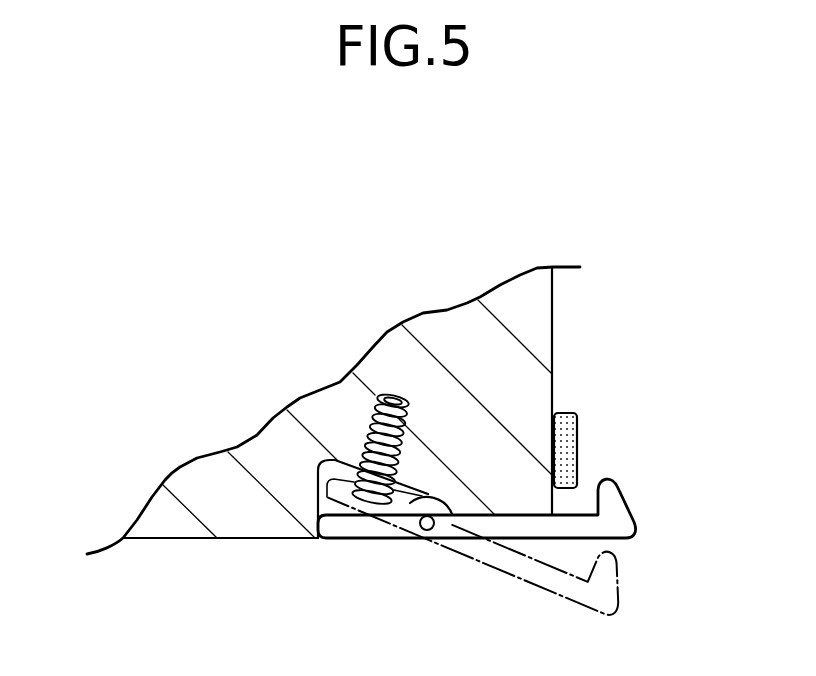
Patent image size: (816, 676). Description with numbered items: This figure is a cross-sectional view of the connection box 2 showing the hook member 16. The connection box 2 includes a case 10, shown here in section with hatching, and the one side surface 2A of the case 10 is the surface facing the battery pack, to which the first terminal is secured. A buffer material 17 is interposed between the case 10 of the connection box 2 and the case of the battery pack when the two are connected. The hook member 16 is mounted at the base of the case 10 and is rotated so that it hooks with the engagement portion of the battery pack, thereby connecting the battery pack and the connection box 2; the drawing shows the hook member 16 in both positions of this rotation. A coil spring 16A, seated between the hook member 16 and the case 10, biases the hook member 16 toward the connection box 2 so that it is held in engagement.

The connection box 2 is at (525, 207).
The one side surface 2A is at (553, 312).
The case 10 is at (237, 527).
The hook member 16 is at (637, 523).
The coil spring 16A is at (378, 383).
The buffer material 17 is at (577, 437).